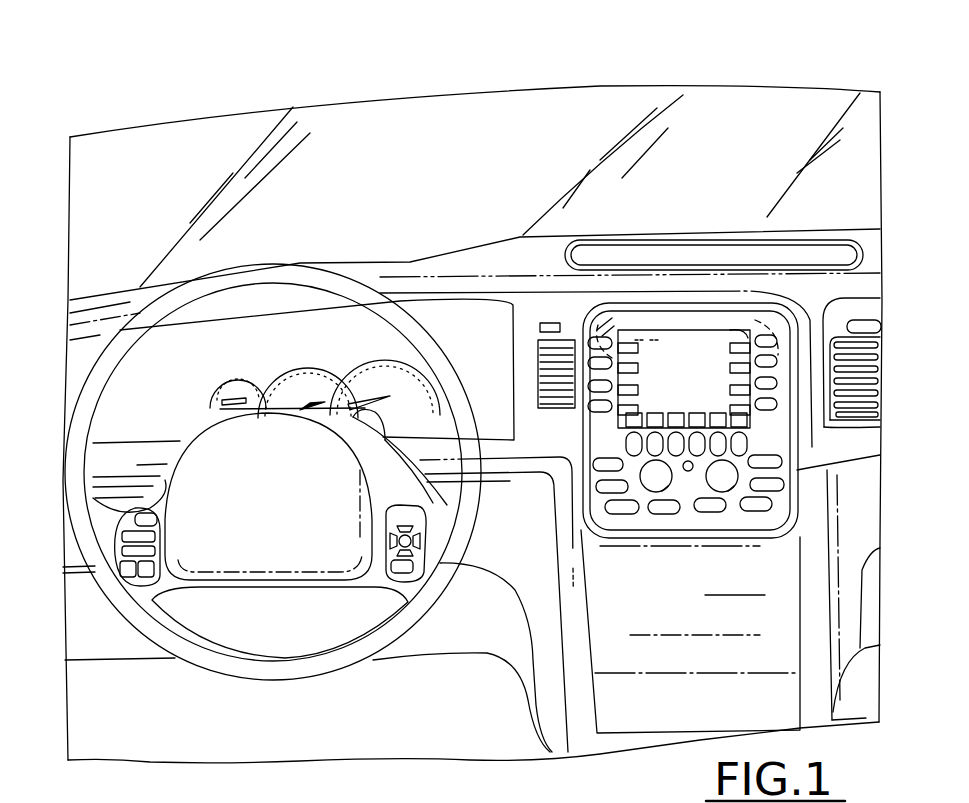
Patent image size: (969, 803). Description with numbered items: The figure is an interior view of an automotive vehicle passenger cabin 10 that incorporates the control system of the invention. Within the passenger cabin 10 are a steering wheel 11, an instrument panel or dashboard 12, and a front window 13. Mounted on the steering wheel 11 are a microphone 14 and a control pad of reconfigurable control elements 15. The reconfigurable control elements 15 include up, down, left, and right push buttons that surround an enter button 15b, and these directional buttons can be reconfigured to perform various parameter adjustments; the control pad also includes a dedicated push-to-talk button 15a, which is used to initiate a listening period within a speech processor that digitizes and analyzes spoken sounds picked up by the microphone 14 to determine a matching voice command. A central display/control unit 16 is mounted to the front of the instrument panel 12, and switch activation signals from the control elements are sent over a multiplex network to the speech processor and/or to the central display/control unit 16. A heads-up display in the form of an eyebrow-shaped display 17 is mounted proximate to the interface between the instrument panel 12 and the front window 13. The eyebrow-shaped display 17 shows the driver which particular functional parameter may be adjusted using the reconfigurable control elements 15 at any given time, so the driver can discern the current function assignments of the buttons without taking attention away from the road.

The passenger cabin 10 is at (124, 116).
The steering wheel 11 is at (140, 318).
The instrument panel 12 is at (466, 332).
The front window 13 is at (225, 124).
The microphone 14 is at (362, 372).
The reconfigurable control elements 15 is at (415, 554).
The push-to-talk button 15a is at (410, 572).
The enter button 15b is at (418, 541).
The central display/control unit 16 is at (686, 540).
The eyebrow-shaped display 17 is at (635, 232).